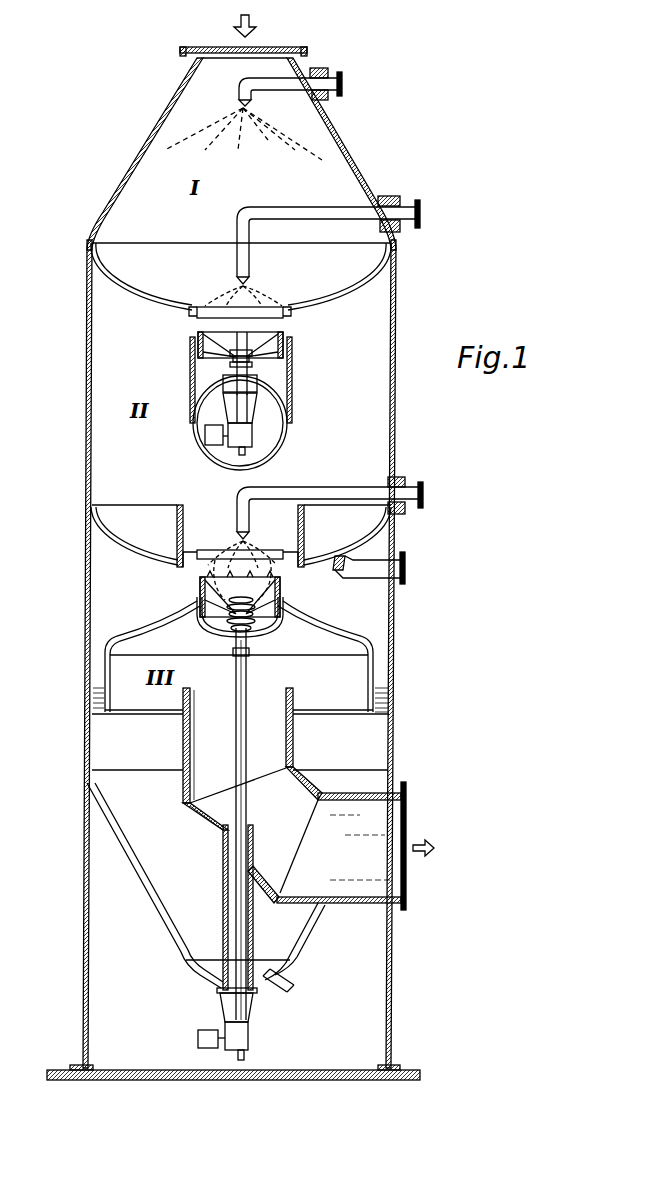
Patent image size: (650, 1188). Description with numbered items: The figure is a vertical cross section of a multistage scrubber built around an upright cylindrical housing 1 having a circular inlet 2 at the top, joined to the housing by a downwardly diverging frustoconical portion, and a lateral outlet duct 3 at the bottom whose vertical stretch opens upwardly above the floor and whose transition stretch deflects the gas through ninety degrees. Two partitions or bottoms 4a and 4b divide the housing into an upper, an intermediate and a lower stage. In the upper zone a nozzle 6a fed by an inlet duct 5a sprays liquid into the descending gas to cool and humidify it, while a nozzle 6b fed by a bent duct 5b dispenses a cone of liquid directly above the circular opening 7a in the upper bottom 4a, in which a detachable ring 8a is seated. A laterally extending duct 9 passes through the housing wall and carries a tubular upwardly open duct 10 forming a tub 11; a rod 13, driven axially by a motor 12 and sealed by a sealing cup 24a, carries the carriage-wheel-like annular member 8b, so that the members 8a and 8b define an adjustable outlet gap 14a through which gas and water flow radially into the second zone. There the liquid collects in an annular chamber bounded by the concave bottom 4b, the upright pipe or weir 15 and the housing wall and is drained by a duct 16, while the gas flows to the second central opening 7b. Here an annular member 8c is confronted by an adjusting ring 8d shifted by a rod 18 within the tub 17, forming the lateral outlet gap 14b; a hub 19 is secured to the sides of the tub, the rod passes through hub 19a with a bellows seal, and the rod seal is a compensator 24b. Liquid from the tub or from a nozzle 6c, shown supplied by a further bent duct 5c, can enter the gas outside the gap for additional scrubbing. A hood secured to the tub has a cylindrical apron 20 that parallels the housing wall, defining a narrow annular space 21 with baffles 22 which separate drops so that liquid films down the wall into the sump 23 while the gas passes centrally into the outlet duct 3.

The cylindrical housing 1 is at (88, 493).
The inlet 2 is at (267, 53).
The lateral outlet duct 3 is at (392, 822).
The upper bottom 4a is at (112, 286).
The intermediate bottom 4b is at (160, 565).
The inlet duct 5a is at (345, 86).
The bent duct 5b is at (270, 210).
The liquid feed pipe 5c is at (375, 493).
The nozzle 6a is at (238, 101).
The nozzle 6b is at (235, 278).
The nozzle 6c is at (236, 534).
The circular opening 7a is at (245, 298).
The second central opening 7b is at (250, 555).
The annular member 8a is at (210, 318).
The annular member 8b is at (275, 340).
The annular member 8c is at (290, 578).
The annular member 8d is at (283, 625).
The laterally extending duct 9 is at (285, 450).
The tubular upwardly open duct 10 is at (290, 395).
The tub 11 is at (277, 380).
The motor 12 is at (205, 438).
The rod 13 is at (247, 412).
The outlet gap 14a is at (268, 330).
The annular lateral outlet gap 14b is at (272, 593).
The upright cylindrical pipe or weir 15 is at (177, 540).
The duct 16 is at (403, 568).
The tub 17 is at (262, 640).
The rod 18 is at (245, 805).
The hub 19 is at (105, 648).
The hub 19a is at (236, 653).
The cylindrical apron 20 is at (120, 718).
The narrow annular space 21 is at (388, 690).
The baffles 22 is at (390, 712).
The sump 23 is at (278, 972).
The sealing cup 24a is at (235, 365).
The compensator 24b is at (232, 627).